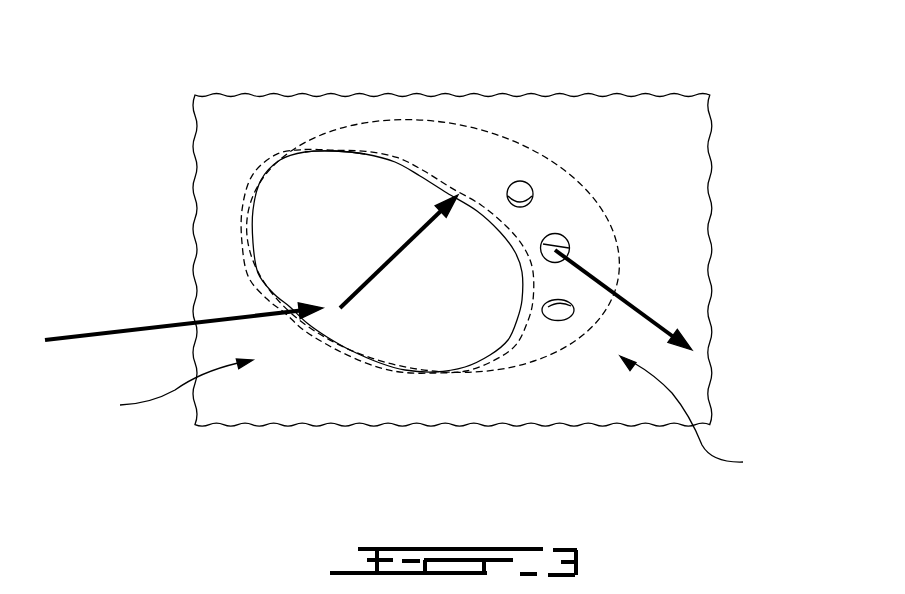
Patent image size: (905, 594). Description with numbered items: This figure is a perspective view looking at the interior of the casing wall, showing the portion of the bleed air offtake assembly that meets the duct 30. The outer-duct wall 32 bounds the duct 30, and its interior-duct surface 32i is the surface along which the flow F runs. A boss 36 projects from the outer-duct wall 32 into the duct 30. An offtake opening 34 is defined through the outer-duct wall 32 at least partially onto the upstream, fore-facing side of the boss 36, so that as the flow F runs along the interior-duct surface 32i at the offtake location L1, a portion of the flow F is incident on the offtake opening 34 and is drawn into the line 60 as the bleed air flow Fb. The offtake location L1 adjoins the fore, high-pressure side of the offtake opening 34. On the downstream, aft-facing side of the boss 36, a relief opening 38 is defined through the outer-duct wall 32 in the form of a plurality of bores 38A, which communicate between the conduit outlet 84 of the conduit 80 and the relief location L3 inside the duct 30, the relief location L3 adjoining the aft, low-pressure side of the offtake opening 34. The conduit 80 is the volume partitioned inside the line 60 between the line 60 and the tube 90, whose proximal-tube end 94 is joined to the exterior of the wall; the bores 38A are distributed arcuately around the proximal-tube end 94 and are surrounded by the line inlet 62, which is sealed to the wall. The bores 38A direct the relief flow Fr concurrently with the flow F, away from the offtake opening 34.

The duct 30 is at (451, 310).
The outer-duct wall 32 is at (509, 260).
The interior-duct surface 32i is at (627, 150).
The offtake opening 34 is at (258, 256).
The boss 36 is at (477, 175).
The relief opening 38 is at (553, 342).
The bores 38A is at (574, 308).
The line 60 is at (366, 199).
The line inlet 62 is at (272, 152).
The conduit 80 is at (658, 206).
The conduit outlet 84 is at (552, 218).
The tube 90 is at (324, 96).
The proximal-tube end 94 is at (333, 165).
The flow F is at (114, 332).
The bleed air flow Fb is at (380, 267).
The relief flow Fr is at (655, 320).
The offtake location L1 is at (172, 393).
The relief location L3 is at (697, 424).